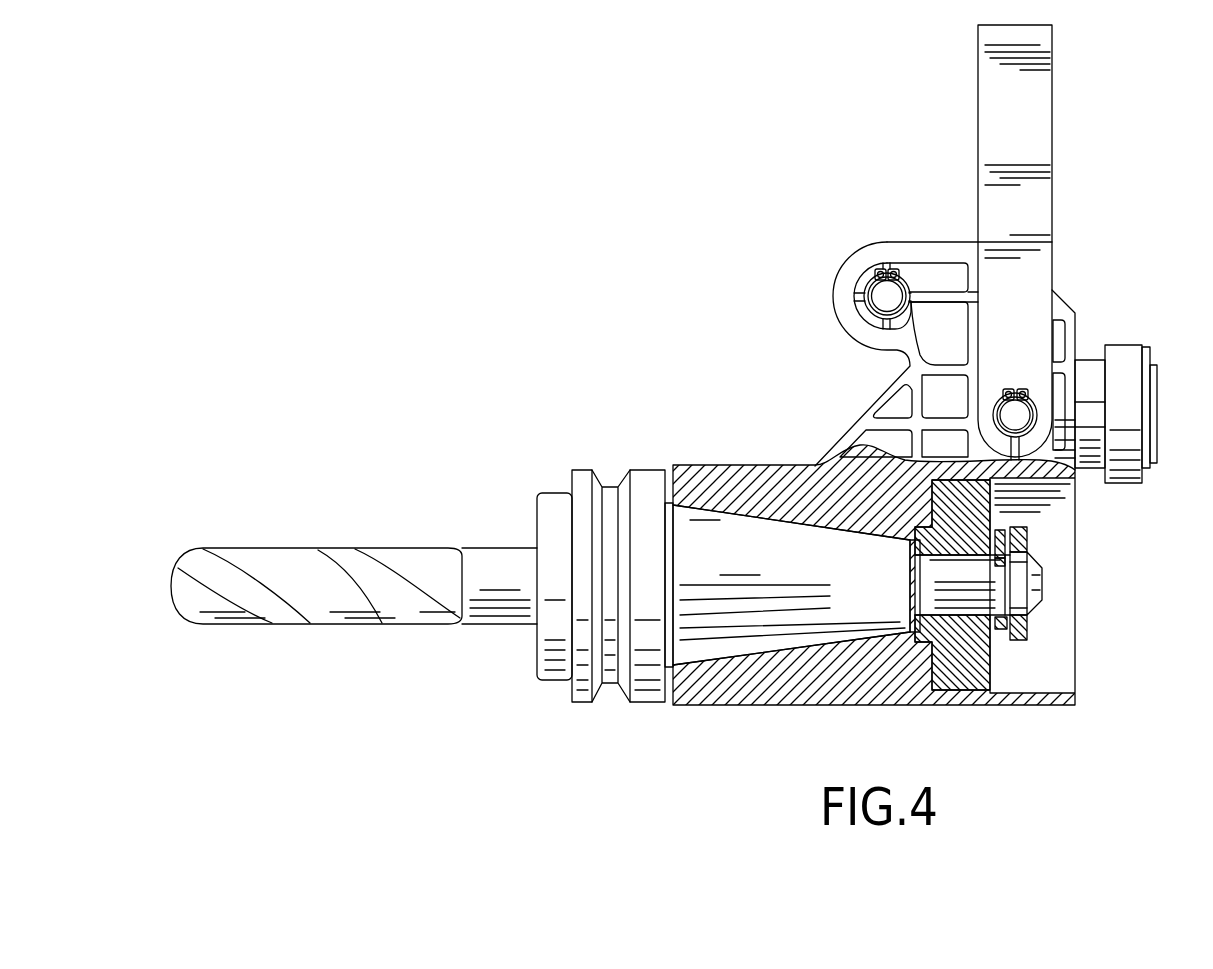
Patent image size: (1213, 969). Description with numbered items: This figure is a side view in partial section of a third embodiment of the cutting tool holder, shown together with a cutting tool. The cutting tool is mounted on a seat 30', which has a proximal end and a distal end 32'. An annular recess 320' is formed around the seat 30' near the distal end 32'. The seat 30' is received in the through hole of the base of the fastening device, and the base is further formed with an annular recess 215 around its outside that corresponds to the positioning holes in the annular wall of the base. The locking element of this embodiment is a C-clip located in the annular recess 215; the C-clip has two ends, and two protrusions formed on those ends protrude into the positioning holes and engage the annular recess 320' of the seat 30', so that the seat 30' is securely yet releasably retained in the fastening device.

The seat 30' is at (605, 613).
The distal end 32' is at (1081, 585).
The annular recess 215 is at (1000, 633).
The annular recess 320' is at (927, 586).